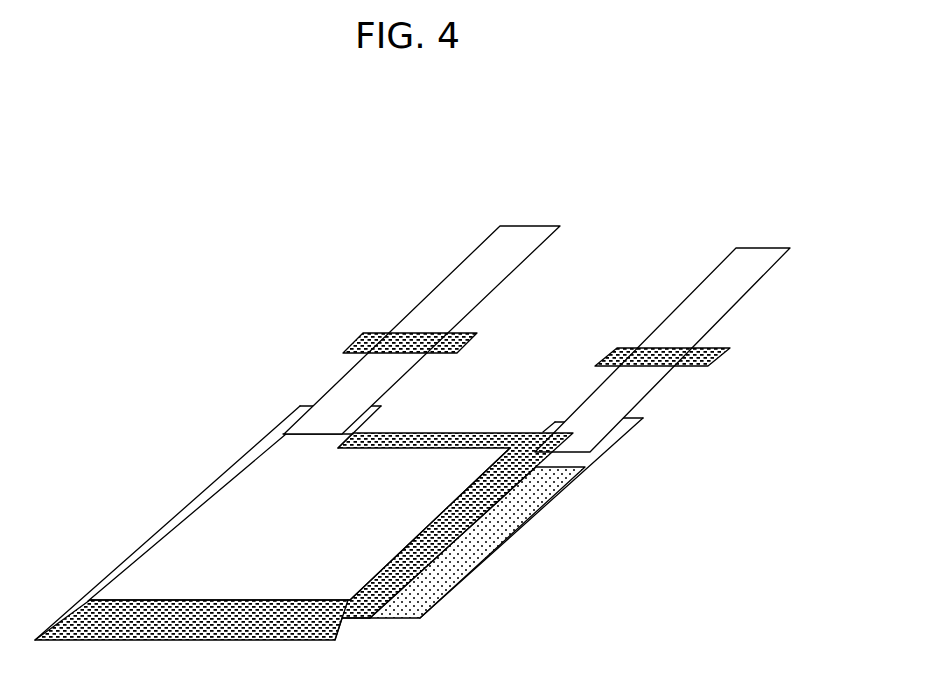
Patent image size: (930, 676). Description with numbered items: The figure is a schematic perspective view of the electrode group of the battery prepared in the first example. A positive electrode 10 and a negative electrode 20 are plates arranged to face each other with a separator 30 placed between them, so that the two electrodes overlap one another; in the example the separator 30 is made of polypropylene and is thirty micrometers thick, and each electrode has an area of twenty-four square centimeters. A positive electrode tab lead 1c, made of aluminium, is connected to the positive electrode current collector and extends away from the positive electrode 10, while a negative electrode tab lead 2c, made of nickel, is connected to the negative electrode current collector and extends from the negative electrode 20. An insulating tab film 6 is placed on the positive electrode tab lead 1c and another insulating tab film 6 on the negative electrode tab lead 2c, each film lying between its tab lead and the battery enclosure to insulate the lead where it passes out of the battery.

The positive electrode tab lead 1c is at (427, 295).
The negative electrode tab lead 2c is at (737, 300).
The insulating tab film 6 is at (362, 333).
The positive electrode 10 is at (208, 517).
The negative electrode 20 is at (473, 548).
The separator 30 is at (88, 627).